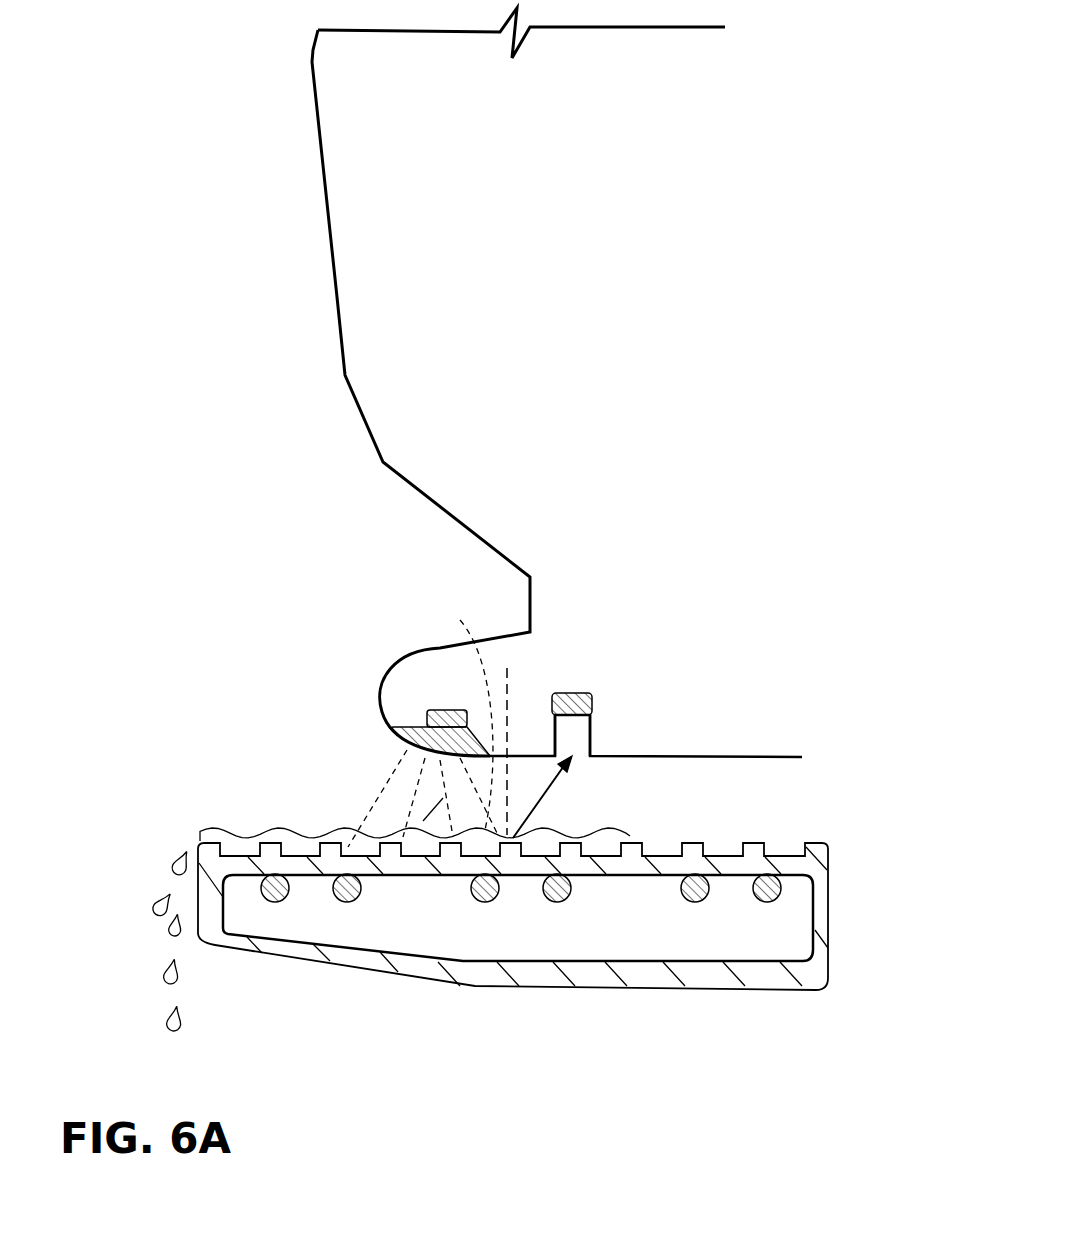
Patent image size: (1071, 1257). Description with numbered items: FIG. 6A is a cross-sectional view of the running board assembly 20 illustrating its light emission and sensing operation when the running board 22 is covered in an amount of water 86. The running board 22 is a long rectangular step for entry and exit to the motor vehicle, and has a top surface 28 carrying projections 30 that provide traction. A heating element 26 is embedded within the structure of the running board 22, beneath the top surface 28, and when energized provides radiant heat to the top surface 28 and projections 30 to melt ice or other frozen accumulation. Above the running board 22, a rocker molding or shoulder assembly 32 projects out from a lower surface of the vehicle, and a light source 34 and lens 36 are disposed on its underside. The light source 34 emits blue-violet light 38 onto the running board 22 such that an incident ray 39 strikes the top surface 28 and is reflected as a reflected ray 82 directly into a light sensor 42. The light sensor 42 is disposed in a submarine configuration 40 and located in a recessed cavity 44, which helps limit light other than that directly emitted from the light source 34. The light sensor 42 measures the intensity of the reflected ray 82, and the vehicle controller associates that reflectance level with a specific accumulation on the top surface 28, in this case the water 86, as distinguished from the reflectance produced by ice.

The running board assembly 20 is at (243, 647).
The running board 22 is at (200, 893).
The heating element 26 is at (347, 902).
The top surface 28 is at (238, 853).
The projections 30 is at (205, 843).
The shoulder assembly 32 is at (420, 648).
The light source 34 is at (425, 712).
The lens 36 is at (400, 745).
The light 38 is at (360, 819).
The incident ray 39 is at (464, 713).
The submarine configuration 40 is at (658, 757).
The light sensor 42 is at (587, 693).
The recessed cavity 44 is at (585, 735).
The reflected ray 82 is at (550, 787).
The water 86 is at (172, 862).